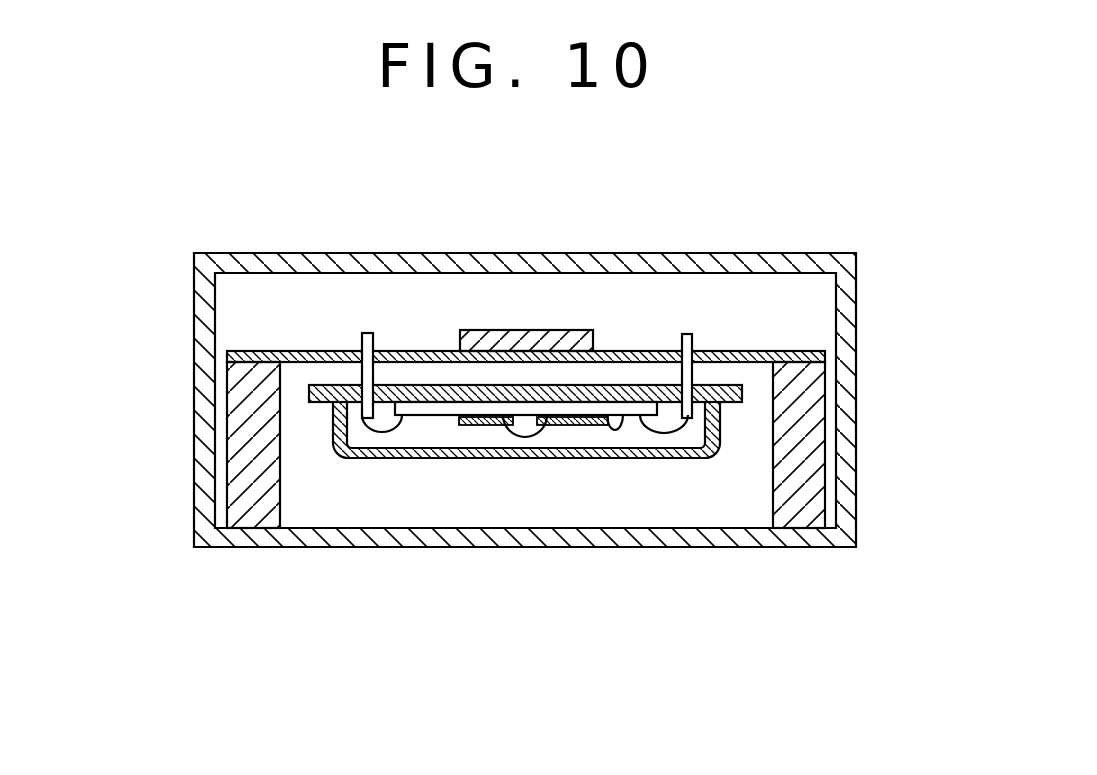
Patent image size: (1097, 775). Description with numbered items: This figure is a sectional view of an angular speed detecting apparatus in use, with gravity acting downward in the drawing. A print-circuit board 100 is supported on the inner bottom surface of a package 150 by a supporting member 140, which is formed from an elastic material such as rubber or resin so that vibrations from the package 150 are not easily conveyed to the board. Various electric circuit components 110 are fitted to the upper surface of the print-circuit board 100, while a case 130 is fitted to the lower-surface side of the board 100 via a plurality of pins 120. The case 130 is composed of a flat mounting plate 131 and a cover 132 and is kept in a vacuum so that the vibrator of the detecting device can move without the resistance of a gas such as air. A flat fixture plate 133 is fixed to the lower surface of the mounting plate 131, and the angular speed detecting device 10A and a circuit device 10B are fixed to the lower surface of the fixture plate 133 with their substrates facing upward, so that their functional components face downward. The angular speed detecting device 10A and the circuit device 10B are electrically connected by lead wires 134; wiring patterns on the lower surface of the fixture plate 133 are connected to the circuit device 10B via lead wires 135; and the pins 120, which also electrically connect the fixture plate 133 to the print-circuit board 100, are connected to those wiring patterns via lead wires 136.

The print-circuit board 100 is at (752, 350).
The electric circuit components 110 is at (517, 328).
The pins 120 is at (363, 333).
The case 130 is at (326, 456).
The mounting plate 131 is at (722, 406).
The cover 132 is at (663, 460).
The fixture plate 133 is at (425, 417).
The lead wires 134 is at (520, 438).
The lead wires 135 is at (615, 432).
The lead wires 136 is at (383, 433).
The supporting member 140 is at (227, 429).
The package 150 is at (857, 477).
The angular speed detecting device 10A is at (481, 427).
The circuit device 10B is at (568, 427).